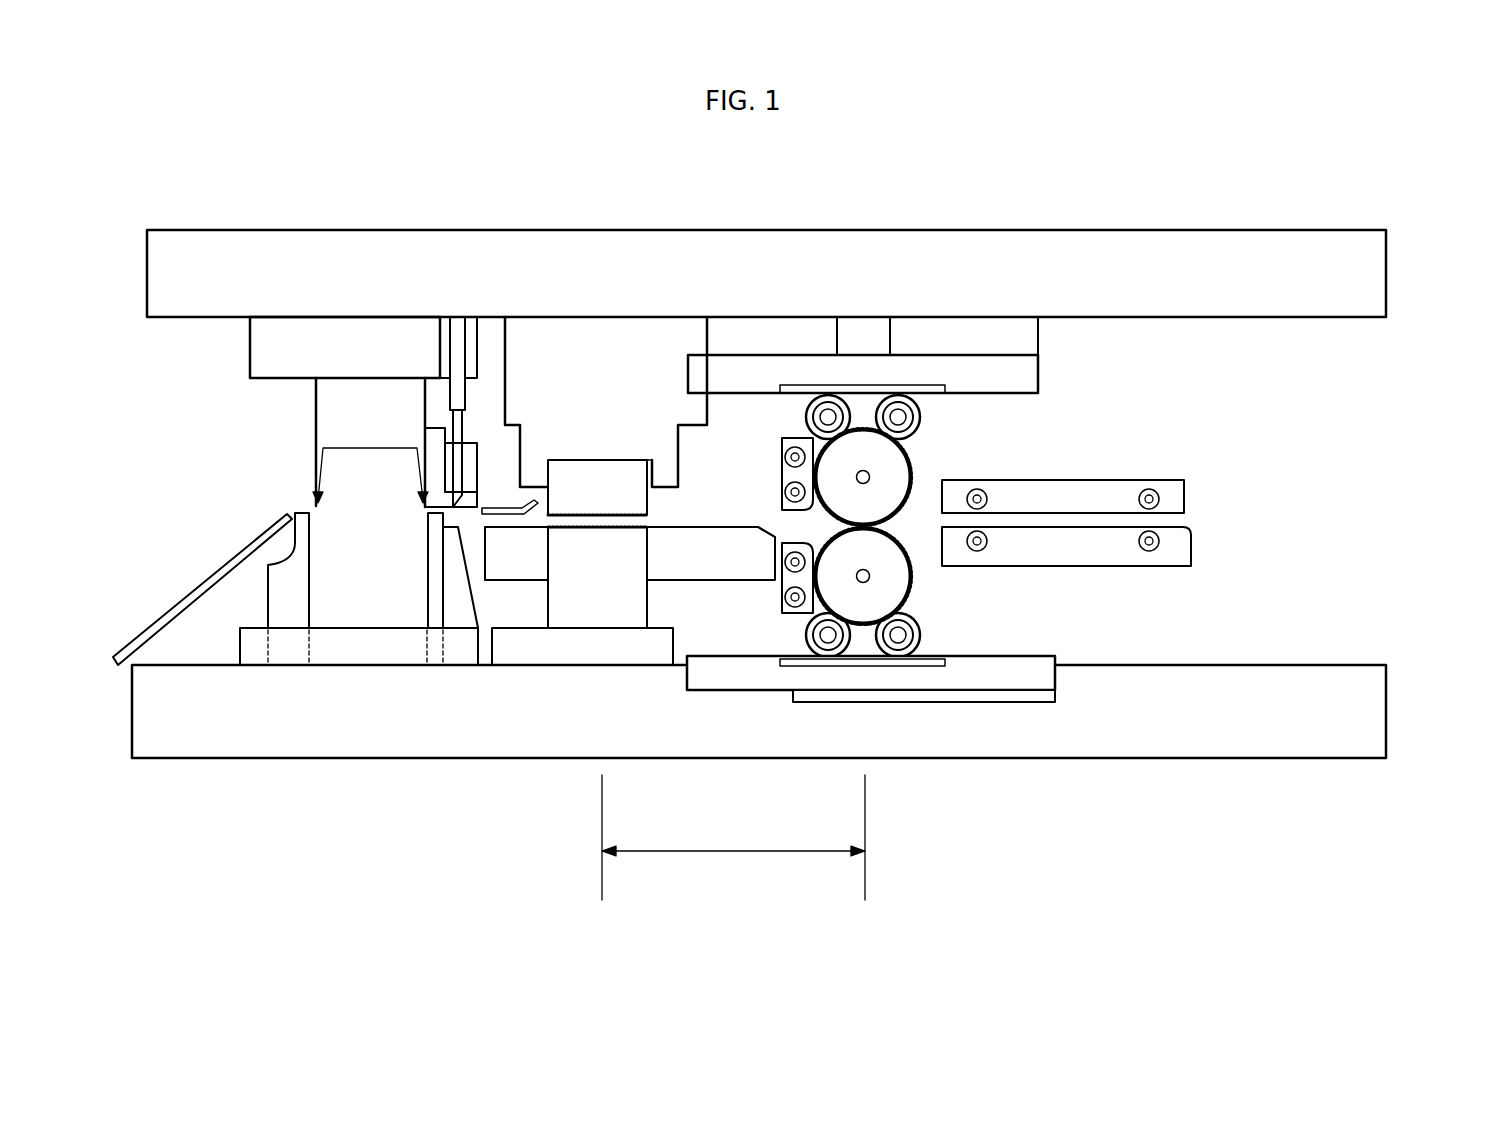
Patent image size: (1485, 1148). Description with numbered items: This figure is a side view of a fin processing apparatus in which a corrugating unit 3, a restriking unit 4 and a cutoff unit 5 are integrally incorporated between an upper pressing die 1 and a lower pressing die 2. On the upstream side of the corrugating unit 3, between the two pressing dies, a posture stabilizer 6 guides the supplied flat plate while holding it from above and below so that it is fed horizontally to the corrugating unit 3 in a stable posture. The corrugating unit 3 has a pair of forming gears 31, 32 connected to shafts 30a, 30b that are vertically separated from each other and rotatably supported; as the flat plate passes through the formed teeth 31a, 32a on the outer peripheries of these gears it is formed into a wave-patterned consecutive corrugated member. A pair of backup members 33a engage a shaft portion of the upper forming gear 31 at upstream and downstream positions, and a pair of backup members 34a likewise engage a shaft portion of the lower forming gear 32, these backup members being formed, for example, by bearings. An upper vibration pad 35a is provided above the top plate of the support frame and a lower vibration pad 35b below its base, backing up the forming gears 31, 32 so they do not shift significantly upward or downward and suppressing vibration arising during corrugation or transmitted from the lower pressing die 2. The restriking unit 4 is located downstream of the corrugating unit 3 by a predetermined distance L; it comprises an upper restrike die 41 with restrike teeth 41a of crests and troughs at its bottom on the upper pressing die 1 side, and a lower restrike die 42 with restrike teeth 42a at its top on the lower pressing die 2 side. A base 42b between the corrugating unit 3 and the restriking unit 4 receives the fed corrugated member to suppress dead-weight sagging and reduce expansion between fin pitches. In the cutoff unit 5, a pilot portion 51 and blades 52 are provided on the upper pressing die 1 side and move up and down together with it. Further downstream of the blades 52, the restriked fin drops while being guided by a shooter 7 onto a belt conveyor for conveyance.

The upper pressing die 1 is at (1386, 272).
The lower pressing die 2 is at (1386, 718).
The corrugating unit 3 is at (926, 345).
The restriking unit 4 is at (603, 443).
The cutoff unit 5 is at (461, 300).
The posture stabilizer 6 is at (1168, 462).
The shooter 7 is at (200, 588).
The shaft 30a is at (870, 475).
The shaft 30b is at (872, 576).
The forming gear 31 is at (888, 462).
The formed teeth 31a is at (890, 457).
The forming gear 32 is at (900, 600).
The formed teeth 32a is at (893, 595).
The backup members 33a is at (813, 397).
The backup members 34a is at (813, 652).
The upper vibration pad 35a is at (785, 368).
The lower vibration pad 35b is at (744, 680).
The upper restrike die 41 is at (627, 487).
The restrike teeth 41a is at (565, 517).
The lower restrike die 42 is at (673, 563).
The restrike teeth 42a is at (643, 525).
The base 42b is at (762, 526).
The pilot portion 51 is at (460, 457).
The blades 52 is at (323, 427).
The predetermined distance L is at (733, 837).